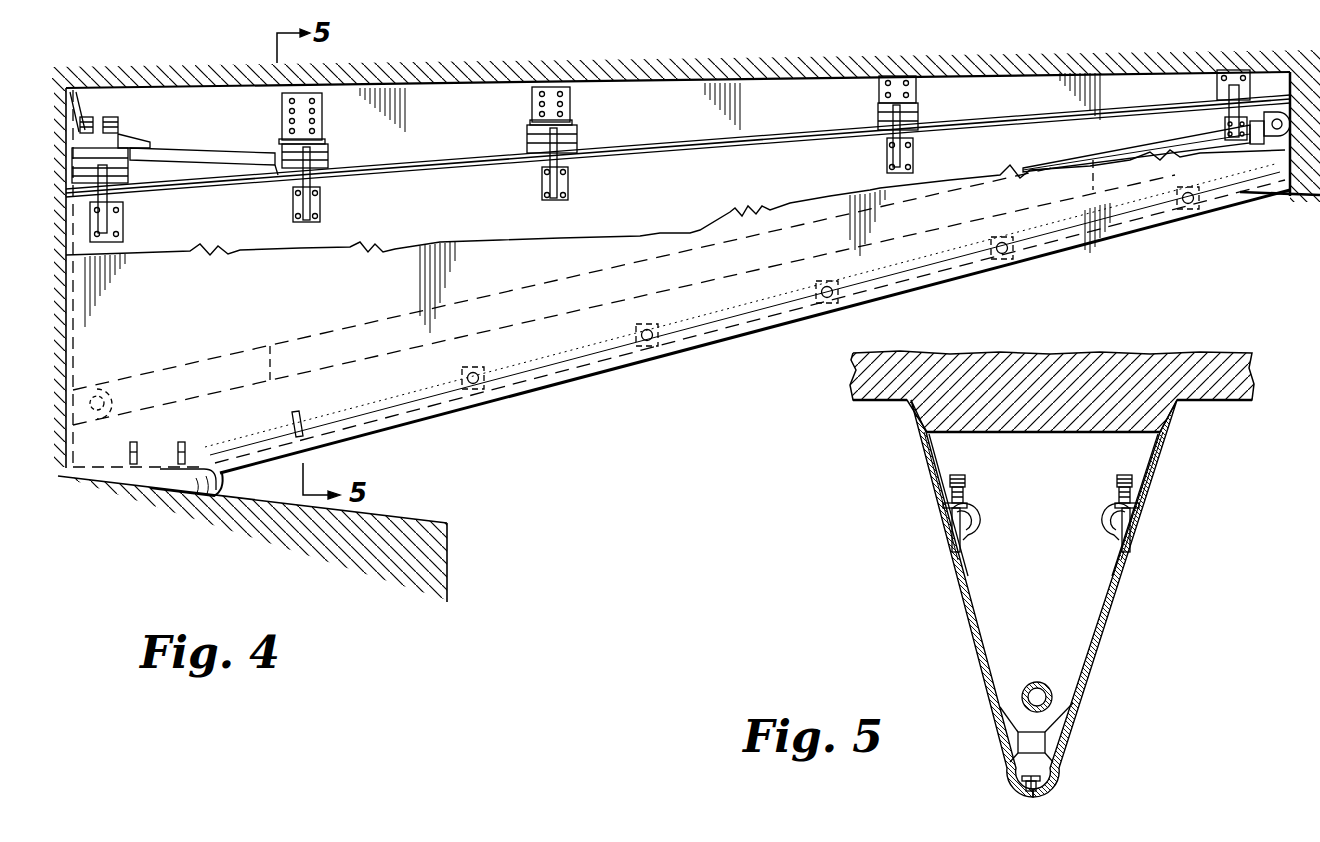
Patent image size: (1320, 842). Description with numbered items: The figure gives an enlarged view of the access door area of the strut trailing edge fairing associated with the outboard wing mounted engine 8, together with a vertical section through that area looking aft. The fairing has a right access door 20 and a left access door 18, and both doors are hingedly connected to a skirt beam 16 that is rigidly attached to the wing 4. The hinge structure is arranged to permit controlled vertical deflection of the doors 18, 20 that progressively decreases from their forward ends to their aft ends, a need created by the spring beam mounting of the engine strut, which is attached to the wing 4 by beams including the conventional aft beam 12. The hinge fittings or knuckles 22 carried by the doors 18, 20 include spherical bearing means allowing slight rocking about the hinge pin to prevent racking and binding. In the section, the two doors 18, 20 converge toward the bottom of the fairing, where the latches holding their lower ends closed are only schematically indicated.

In FIG. 4, the wing 4 is at (1113, 64).
In FIG. 5, the wing 4 is at (1062, 364).
In FIG. 4, the outboard wing mounted engine 8 is at (281, 497).
In FIG. 4, the aft beam 12 is at (520, 325).
In FIG. 4, the skirt beam 16 is at (690, 121).
In FIG. 5, the skirt beam 16 is at (928, 463).
In FIG. 4, the left access door 18 is at (402, 297).
In FIG. 5, the left access door 18 is at (1115, 600).
In FIG. 4, the right access door 20 is at (665, 213).
In FIG. 5, the right access door 20 is at (968, 614).
In FIG. 5, the hinge fitting or knuckle 22 is at (980, 511).